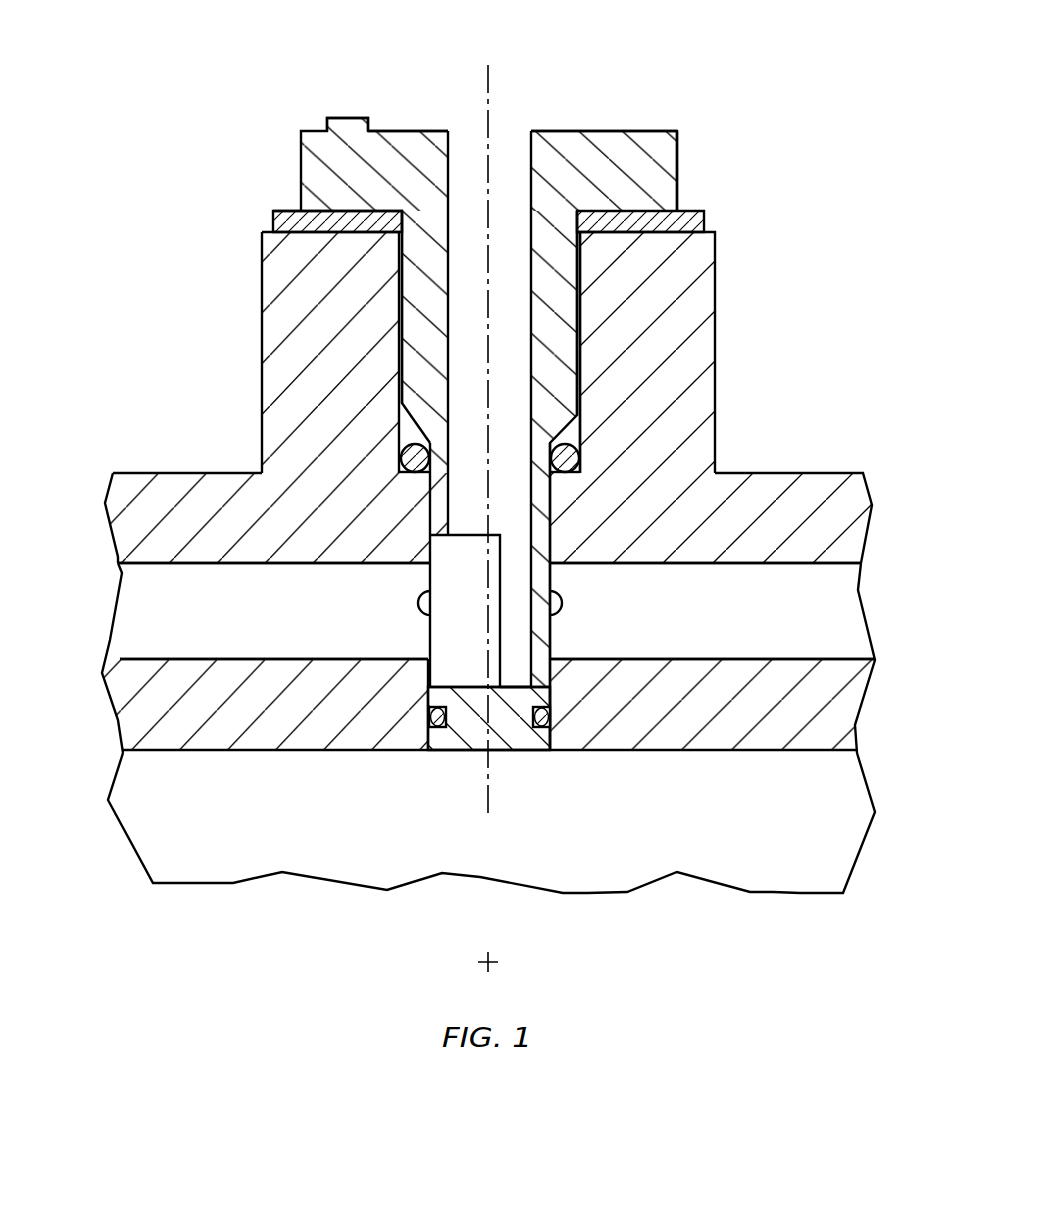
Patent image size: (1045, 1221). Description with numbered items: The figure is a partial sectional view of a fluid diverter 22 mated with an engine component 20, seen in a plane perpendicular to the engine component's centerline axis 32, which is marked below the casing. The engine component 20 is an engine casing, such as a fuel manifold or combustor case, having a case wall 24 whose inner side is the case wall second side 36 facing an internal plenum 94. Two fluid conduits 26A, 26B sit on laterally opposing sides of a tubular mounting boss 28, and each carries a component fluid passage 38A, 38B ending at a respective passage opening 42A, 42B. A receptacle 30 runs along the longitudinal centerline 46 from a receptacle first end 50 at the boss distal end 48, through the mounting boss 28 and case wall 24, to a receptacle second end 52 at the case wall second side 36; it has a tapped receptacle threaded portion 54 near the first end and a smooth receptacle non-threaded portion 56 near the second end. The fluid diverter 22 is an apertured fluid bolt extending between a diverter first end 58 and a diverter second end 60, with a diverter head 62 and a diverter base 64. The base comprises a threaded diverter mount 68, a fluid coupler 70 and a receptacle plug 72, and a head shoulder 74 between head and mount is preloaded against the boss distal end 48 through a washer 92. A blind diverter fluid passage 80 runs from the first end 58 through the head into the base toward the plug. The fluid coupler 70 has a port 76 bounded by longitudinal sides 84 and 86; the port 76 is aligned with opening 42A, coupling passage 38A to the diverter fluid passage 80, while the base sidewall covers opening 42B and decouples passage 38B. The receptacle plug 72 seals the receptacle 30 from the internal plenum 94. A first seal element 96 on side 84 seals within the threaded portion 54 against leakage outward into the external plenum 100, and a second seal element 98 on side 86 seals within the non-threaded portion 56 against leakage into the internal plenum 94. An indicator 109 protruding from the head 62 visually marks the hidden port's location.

The external plenum 100 is at (268, 63).
The indicator 109 is at (345, 112).
The longitudinal centerline 46 is at (488, 72).
The diverter fluid passage 80 is at (507, 163).
The diverter first end 58 is at (613, 131).
The fluid diverter 22 is at (522, 424).
The diverter head 62 is at (680, 156).
The distal end 48 is at (708, 231).
The engine component 20 is at (487, 534).
The washer 92 is at (273, 222).
The receptacle first end 50 is at (405, 216).
The head shoulder 74 is at (666, 231).
The receptacle threaded portion 54 is at (406, 306).
The mounting boss 28 is at (255, 335).
The diverter mount 68 is at (578, 319).
The diverter base 64 is at (583, 369).
The fluid conduit 26A is at (126, 466).
The fluid conduit 26B is at (836, 466).
The first seal element 96 is at (582, 445).
The receptacle non-threaded portion 56 is at (438, 508).
The longitudinal first side 84 is at (428, 553).
The port 76 is at (432, 556).
The fluid coupler 70 is at (552, 520).
The component fluid passage 38A is at (143, 605).
The component fluid passage opening 42A is at (428, 603).
The component fluid passage opening 42B is at (554, 603).
The component fluid passage 38B is at (843, 612).
The longitudinal second side 86 is at (450, 687).
The second seal element 98 is at (552, 716).
The case wall 24 is at (113, 730).
The case wall second side 36 is at (167, 753).
The receptacle 30 is at (433, 756).
The receptacle plug 72 is at (522, 761).
The diverter second end 60 is at (520, 753).
The receptacle second end 52 is at (543, 753).
The internal plenum 94 is at (700, 832).
The centerline axis 32 is at (498, 958).